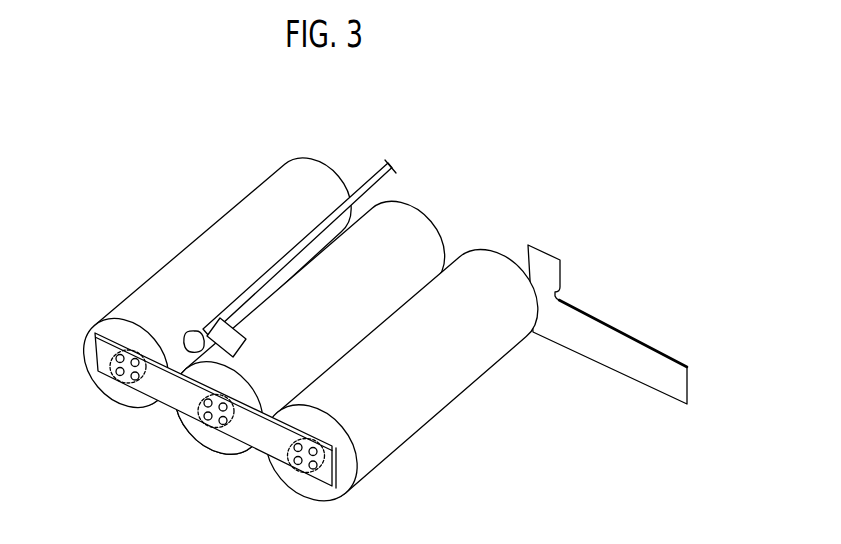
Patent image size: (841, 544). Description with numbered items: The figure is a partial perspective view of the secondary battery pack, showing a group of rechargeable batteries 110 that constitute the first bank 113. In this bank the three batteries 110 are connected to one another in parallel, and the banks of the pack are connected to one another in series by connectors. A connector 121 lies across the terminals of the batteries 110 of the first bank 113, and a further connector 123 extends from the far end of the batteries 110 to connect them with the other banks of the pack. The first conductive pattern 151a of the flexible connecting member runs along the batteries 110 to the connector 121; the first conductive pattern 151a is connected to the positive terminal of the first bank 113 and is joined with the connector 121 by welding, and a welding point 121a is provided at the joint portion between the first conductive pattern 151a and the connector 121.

The first bank 113 is at (318, 305).
The rechargeable battery 110 is at (258, 213).
The connector 121 is at (163, 383).
The welding point 121a is at (184, 333).
The connector 123 is at (593, 327).
The first conductive pattern 151a is at (380, 181).